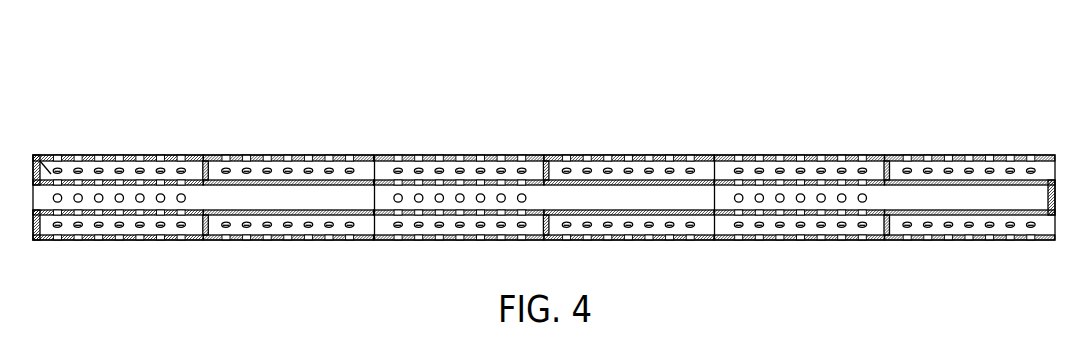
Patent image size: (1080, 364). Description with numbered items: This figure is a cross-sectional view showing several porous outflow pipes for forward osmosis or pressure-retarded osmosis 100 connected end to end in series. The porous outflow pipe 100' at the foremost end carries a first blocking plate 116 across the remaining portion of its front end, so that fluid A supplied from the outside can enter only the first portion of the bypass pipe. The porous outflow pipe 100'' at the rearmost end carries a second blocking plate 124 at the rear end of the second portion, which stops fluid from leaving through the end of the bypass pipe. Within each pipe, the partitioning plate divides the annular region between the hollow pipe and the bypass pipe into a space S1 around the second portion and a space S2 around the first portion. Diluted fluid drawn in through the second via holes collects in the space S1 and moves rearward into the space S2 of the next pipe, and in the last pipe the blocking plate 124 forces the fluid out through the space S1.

The porous outflow pipe disposed at the foremost end 100' is at (203, 132).
The porous outflow pipe for osmosis 100 is at (544, 132).
The porous outflow pipe disposed at the rearmost end 100'' is at (884, 132).
The first blocking plate 116 is at (52, 155).
The second blocking plate 124 is at (1048, 198).
The space S1 is at (365, 172).
The space S2 is at (386, 170).